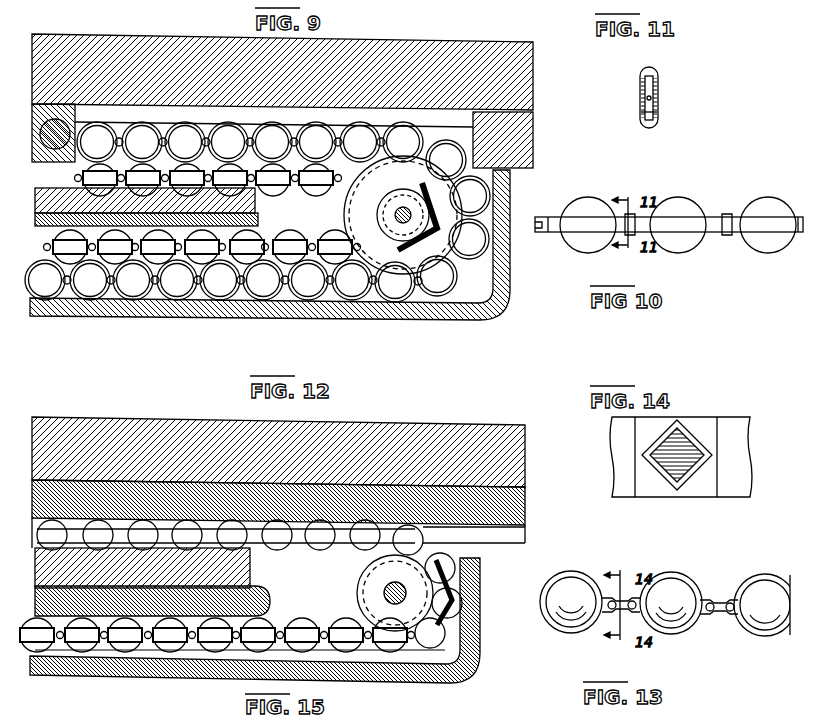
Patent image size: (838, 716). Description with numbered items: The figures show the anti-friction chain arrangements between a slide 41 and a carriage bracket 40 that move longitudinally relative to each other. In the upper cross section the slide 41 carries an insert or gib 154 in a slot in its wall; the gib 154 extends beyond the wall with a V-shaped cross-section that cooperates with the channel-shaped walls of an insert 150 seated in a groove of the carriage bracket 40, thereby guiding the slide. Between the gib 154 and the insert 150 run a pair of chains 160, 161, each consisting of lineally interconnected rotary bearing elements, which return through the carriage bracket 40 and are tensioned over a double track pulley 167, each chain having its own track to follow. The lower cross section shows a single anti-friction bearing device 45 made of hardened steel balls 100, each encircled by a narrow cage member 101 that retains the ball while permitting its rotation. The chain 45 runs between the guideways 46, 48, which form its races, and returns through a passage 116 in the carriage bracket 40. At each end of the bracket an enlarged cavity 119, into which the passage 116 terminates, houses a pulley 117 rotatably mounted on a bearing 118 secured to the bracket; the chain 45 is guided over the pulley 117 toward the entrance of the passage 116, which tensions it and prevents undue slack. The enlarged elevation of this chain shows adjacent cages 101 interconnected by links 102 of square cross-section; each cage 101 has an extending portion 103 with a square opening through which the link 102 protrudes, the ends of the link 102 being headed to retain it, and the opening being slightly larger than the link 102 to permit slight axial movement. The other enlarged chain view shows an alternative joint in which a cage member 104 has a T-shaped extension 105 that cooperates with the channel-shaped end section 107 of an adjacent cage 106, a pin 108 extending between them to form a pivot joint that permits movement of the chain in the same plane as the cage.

In FIG. 9, the slide 41 is at (502, 54).
In FIG. 12, the slide 41 is at (472, 440).
In FIG. 9, the insert or gib 154 is at (533, 118).
In FIG. 9, the channel-shaped insert member 150 is at (256, 203).
In FIG. 9, the carriage bracket 40 is at (258, 222).
In FIG. 12, the carriage bracket 40 is at (268, 602).
In FIG. 9, the double track pulley 167 is at (360, 206).
In FIG. 9, the chain 161 is at (257, 241).
In FIG. 9, the chain 160 is at (443, 282).
In FIG. 10, the cage member 104 is at (578, 222).
In FIG. 10, the adjacent cage 106 is at (700, 220).
In FIG. 11, the T-shaped extension 105 is at (640, 97).
In FIG. 11, the channel-shaped end section 107 is at (640, 113).
In FIG. 11, the pin 108 is at (660, 92).
In FIG. 12, the guideway 48 is at (525, 503).
In FIG. 12, the cage member 101 is at (412, 533).
In FIG. 14, the cage member 101 is at (698, 488).
In FIG. 13, the cage member 101 is at (573, 572).
In FIG. 12, the guideway 46 is at (250, 565).
In FIG. 12, the hardened steel ball 100 is at (318, 549).
In FIG. 13, the hardened steel ball 100 is at (560, 592).
In FIG. 12, the pulley 117 is at (373, 590).
In FIG. 12, the bearing 118 is at (407, 595).
In FIG. 12, the anti-friction bearing device 45 is at (241, 586).
In FIG. 12, the interconnecting link 102 is at (447, 607).
In FIG. 14, the interconnecting link 102 is at (687, 442).
In FIG. 12, the passage 116 is at (105, 653).
In FIG. 12, the enlarged cavity 119 is at (250, 650).
In FIG. 13, the extending portion 103 is at (733, 618).